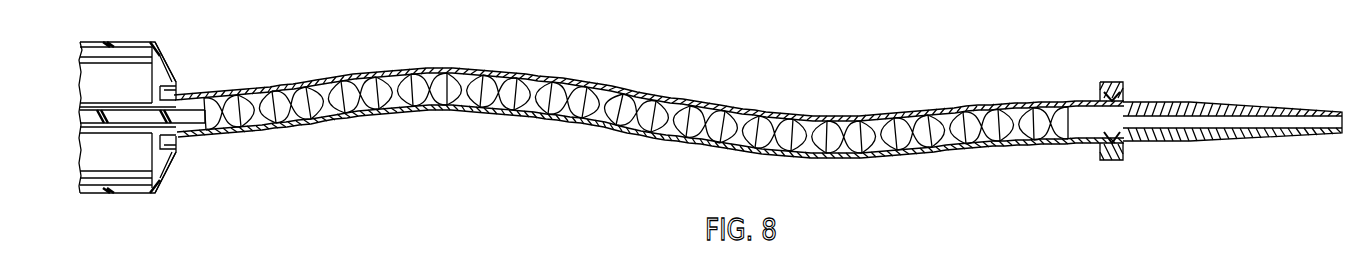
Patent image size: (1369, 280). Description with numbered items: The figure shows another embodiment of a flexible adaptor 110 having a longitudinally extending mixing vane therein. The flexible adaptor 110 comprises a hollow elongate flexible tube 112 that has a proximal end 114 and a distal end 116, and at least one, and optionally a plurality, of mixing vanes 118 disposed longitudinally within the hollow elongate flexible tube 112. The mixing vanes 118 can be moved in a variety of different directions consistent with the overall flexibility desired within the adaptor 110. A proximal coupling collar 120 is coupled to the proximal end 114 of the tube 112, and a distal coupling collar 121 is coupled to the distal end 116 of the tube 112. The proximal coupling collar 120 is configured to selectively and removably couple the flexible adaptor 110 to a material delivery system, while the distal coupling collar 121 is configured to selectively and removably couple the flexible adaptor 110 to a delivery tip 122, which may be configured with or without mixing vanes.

The flexible adaptor 110 is at (649, 80).
The hollow elongate flexible tube 112 is at (818, 118).
The proximal end 114 is at (366, 62).
The distal end 116 is at (957, 100).
The mixing vane 118 is at (424, 72).
The proximal coupling collar 120 is at (185, 70).
The distal coupling collar 121 is at (1112, 80).
The delivery tip 122 is at (1190, 145).